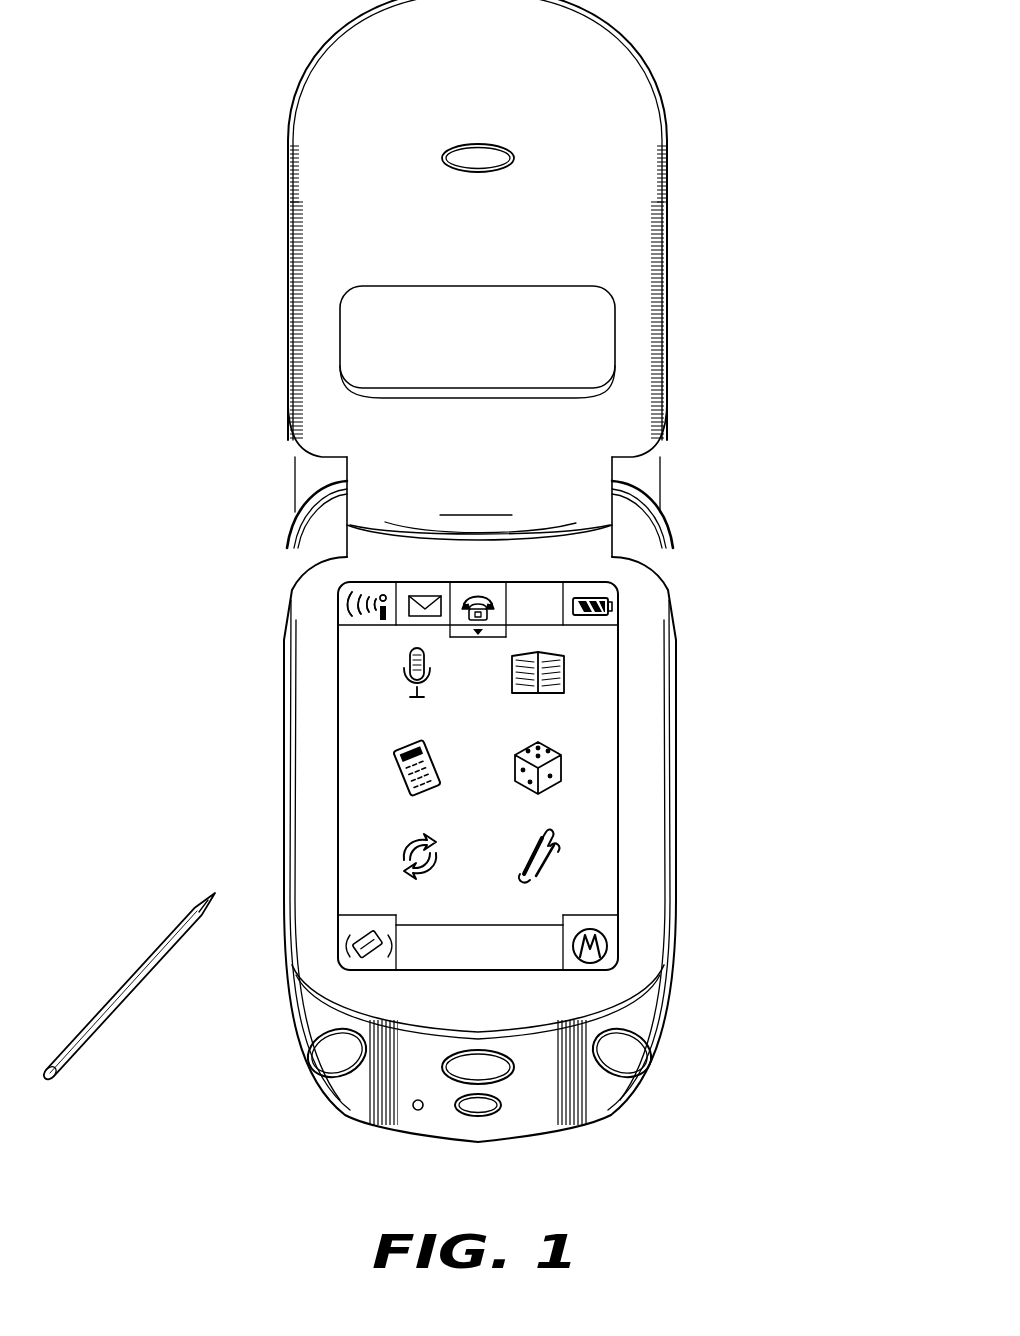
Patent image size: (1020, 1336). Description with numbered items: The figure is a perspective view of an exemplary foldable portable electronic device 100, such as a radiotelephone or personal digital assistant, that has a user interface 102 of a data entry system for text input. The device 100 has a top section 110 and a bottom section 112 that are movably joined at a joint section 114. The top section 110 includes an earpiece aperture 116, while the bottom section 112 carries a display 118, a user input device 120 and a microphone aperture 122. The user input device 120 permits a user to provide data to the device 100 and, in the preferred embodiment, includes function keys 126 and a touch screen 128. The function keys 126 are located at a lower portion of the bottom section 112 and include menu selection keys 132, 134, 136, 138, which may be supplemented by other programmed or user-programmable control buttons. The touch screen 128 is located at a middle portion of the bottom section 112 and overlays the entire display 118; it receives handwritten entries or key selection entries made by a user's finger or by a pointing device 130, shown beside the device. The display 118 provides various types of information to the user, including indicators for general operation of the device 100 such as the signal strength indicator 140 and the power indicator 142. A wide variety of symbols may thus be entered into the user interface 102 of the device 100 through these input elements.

The portable electronic device 100 is at (727, 1200).
The user interface 102 is at (282, 795).
The top section 110 is at (277, 236).
The bottom section 112 is at (282, 900).
The joint section 114 is at (356, 503).
The earpiece aperture 116 is at (486, 166).
The display 118 is at (621, 760).
The user input device 120 is at (572, 873).
The microphone aperture 122 is at (419, 1112).
The function keys 126 is at (549, 1089).
The touch screen 128 is at (638, 777).
The pointing device 130 is at (136, 977).
The menu selection key 132 is at (328, 1060).
The menu selection key 134 is at (478, 1118).
The menu selection key 136 is at (478, 1055).
The menu selection key 138 is at (632, 1060).
The signal strength indicator 140 is at (343, 608).
The power indicator 142 is at (592, 598).